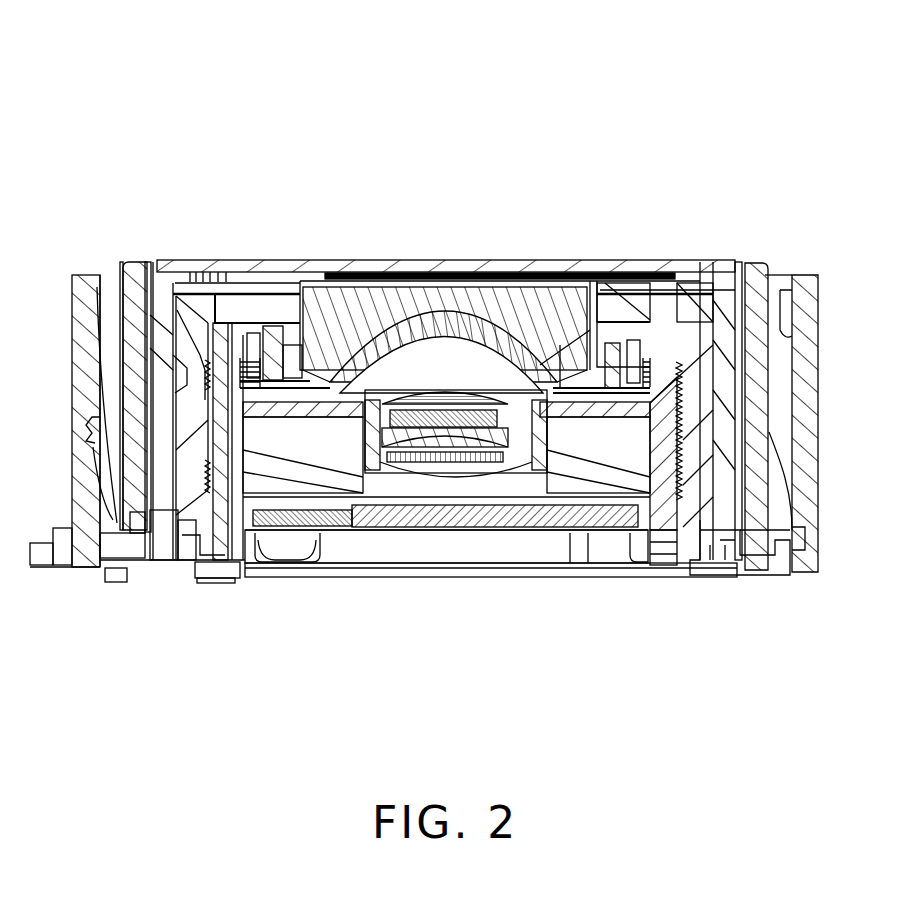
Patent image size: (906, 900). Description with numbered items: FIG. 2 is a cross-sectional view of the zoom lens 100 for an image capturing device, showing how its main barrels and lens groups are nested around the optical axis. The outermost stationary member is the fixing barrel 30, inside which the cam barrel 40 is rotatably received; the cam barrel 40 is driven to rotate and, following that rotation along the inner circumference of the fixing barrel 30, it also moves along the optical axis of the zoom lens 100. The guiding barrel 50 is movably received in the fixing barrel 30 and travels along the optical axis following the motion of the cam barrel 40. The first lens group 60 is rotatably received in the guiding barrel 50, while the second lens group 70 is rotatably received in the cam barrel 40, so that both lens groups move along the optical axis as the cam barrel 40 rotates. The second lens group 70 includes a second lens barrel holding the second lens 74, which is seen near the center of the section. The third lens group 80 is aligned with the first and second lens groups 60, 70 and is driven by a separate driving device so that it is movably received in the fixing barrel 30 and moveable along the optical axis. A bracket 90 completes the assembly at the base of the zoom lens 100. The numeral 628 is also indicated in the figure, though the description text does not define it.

The zoom lens 100 is at (448, 80).
The fixing barrel 30 is at (83, 550).
The flexible circuit board 628 is at (152, 350).
The cam barrel 40 is at (190, 332).
The guiding barrel 50 is at (130, 520).
The first lens group 60 is at (155, 500).
The second lens group 70 is at (235, 553).
The bracket 90 is at (210, 550).
The third lens group 80 is at (305, 522).
The second lens 74 is at (460, 462).